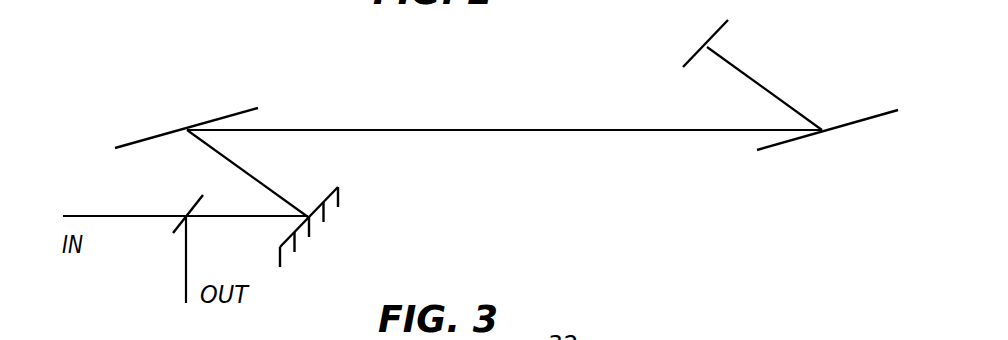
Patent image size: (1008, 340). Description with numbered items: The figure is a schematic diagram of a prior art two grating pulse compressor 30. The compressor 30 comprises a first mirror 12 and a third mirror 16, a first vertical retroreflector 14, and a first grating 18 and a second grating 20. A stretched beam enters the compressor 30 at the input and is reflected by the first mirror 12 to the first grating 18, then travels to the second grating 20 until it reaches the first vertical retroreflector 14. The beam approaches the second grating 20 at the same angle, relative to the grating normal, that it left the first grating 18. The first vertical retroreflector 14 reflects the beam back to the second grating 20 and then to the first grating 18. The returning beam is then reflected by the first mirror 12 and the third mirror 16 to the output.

The first mirror 12 is at (339, 189).
The first vertical retroreflector 14 is at (723, 28).
The third mirror 16 is at (174, 232).
The first grating 18 is at (245, 110).
The second grating 20 is at (870, 117).
The two grating pulse compressor 30 is at (609, 204).